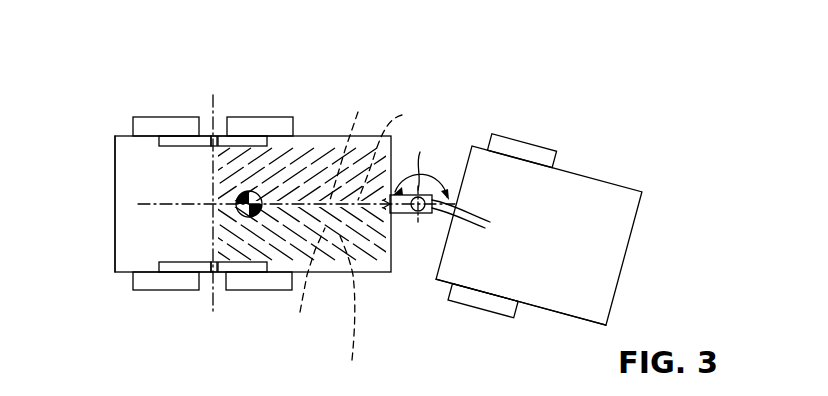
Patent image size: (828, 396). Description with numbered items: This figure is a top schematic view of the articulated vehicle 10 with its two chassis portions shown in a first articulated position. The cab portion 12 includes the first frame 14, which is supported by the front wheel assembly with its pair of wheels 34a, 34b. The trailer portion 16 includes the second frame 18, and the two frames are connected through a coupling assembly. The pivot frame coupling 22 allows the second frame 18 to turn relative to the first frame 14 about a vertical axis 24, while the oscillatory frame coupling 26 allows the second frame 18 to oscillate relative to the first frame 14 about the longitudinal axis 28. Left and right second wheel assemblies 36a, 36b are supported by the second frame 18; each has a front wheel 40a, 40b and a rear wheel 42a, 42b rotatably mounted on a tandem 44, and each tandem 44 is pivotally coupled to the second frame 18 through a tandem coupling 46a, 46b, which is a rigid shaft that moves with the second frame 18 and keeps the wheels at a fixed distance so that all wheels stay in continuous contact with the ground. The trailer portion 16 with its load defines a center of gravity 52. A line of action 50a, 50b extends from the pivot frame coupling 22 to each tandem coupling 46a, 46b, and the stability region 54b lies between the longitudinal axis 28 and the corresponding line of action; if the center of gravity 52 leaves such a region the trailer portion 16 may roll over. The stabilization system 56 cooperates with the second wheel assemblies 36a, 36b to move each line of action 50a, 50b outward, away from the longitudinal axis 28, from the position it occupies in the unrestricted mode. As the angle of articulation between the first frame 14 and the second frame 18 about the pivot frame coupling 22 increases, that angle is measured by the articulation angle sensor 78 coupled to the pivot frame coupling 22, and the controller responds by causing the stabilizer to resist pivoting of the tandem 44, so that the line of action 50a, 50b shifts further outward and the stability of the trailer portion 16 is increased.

The articulated vehicle 10 is at (612, 112).
The cab portion 12 is at (637, 260).
The first frame 14 is at (570, 318).
The trailer portion 16 is at (100, 250).
The second frame 18 is at (384, 275).
The pivot frame coupling 22 is at (432, 205).
The vertical axis 24 is at (437, 218).
The oscillatory frame coupling 26 is at (408, 216).
The longitudinal axis 28 is at (150, 205).
The wheel 34a is at (538, 156).
The wheel 34b is at (500, 310).
The left second wheel assembly 36a is at (290, 110).
The right second wheel assembly 36b is at (259, 296).
The front wheel 40a is at (253, 128).
The front wheel 40b is at (245, 290).
The rear wheel 42a is at (148, 126).
The rear wheel 42b is at (155, 286).
The tandem 44 is at (162, 142).
The tandem coupling 46a is at (211, 138).
The tandem coupling 46b is at (212, 273).
The line of action 50a is at (413, 110).
The line of action 50b is at (335, 313).
The center of gravity 52 is at (240, 213).
The stability region 54b is at (250, 174).
The stabilization system 56 is at (352, 78).
The articulation angle sensor 78 is at (434, 210).